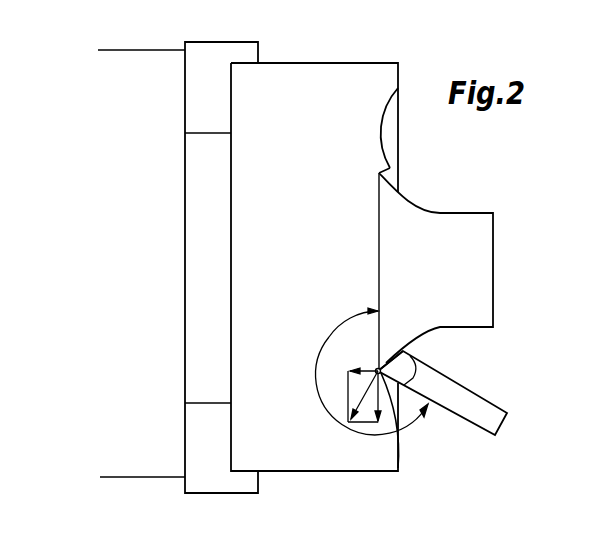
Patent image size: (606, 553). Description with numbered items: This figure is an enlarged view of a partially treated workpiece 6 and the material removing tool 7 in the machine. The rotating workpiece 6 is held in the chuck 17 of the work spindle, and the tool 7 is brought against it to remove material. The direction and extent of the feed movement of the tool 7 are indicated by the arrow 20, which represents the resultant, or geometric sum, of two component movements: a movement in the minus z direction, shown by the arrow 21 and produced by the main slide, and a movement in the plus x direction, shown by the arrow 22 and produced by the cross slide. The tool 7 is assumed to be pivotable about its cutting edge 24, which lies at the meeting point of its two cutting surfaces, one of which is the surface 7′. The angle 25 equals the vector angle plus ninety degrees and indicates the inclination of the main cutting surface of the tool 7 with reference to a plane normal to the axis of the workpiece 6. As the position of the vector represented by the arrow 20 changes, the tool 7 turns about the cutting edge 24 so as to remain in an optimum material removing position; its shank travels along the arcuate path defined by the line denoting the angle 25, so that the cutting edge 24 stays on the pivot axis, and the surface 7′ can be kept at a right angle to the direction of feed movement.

The workpiece 6 is at (292, 77).
The tool 7 is at (492, 418).
The cutting surface 7′ is at (417, 371).
The chuck 17 is at (155, 60).
The arrow 20 is at (378, 371).
The arrow 21 is at (349, 356).
The arrow 22 is at (377, 392).
The cutting edge 24 is at (378, 371).
The angle 25 is at (345, 319).